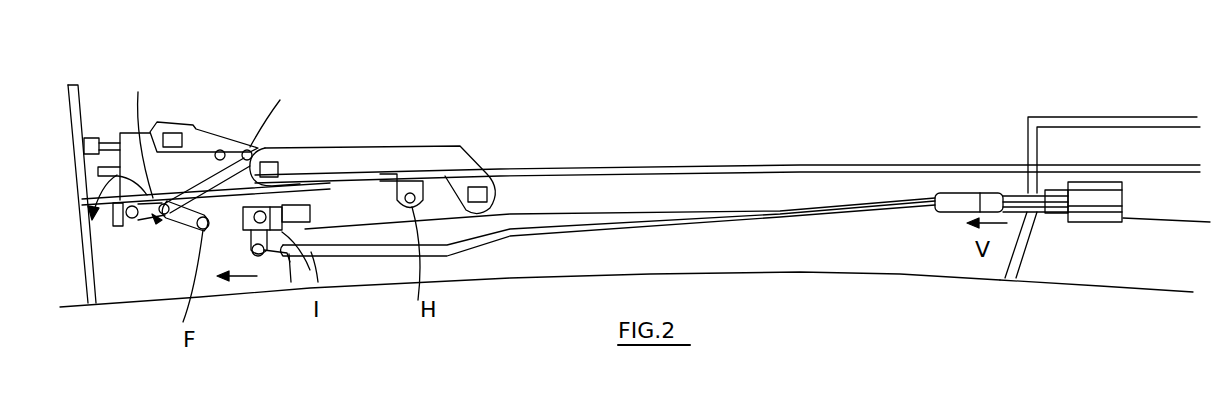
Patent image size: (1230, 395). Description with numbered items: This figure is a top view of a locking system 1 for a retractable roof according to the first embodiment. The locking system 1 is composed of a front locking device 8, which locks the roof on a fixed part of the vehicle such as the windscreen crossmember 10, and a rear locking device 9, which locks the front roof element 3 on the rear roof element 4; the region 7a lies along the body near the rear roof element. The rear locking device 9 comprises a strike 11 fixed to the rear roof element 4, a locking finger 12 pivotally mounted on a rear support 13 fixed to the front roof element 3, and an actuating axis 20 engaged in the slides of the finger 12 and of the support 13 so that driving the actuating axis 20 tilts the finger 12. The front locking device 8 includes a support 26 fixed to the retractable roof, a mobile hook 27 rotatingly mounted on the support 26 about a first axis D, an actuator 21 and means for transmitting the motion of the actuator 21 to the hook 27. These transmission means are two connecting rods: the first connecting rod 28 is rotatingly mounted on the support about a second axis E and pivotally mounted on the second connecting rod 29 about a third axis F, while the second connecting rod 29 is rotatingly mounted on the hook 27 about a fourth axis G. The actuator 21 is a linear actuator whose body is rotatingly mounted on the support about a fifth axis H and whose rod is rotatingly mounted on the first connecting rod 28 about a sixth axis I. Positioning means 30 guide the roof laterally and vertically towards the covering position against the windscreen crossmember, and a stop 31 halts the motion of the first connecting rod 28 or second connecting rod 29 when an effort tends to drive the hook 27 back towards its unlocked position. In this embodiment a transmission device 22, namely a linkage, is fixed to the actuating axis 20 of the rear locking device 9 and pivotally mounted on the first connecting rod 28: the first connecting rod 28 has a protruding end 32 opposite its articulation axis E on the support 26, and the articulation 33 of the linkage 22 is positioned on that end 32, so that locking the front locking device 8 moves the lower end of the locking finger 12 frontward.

The locking system 1 is at (607, 97).
The front roof element 3 is at (760, 273).
The rear roof element 4 is at (1170, 287).
The floor portion 7a is at (1100, 253).
The front locking device 8 is at (300, 127).
The rear locking device 9 is at (1078, 117).
The windscreen crossmember 10 is at (72, 283).
The strike 11 is at (1110, 192).
The locking finger 12 is at (1010, 193).
The rear support 13 is at (980, 190).
The actuating axis 20 is at (1050, 213).
The actuator 21 is at (343, 200).
The transmission device 22 is at (648, 223).
The support 26 is at (432, 160).
The mobile hook 27 is at (135, 228).
The first connecting rod 28 is at (247, 150).
The second connecting rod 29 is at (166, 218).
The positioning means 30 is at (100, 137).
The stop 31 is at (218, 150).
The end of the first connecting rod 32 is at (290, 263).
The articulation 33 is at (263, 256).